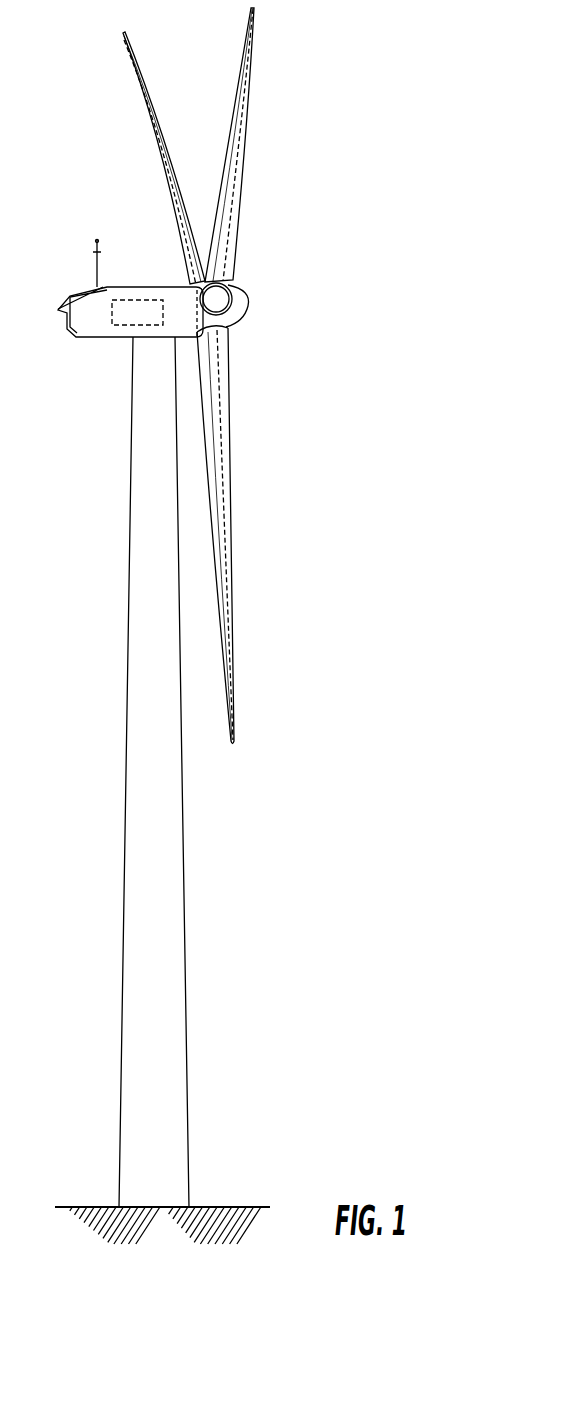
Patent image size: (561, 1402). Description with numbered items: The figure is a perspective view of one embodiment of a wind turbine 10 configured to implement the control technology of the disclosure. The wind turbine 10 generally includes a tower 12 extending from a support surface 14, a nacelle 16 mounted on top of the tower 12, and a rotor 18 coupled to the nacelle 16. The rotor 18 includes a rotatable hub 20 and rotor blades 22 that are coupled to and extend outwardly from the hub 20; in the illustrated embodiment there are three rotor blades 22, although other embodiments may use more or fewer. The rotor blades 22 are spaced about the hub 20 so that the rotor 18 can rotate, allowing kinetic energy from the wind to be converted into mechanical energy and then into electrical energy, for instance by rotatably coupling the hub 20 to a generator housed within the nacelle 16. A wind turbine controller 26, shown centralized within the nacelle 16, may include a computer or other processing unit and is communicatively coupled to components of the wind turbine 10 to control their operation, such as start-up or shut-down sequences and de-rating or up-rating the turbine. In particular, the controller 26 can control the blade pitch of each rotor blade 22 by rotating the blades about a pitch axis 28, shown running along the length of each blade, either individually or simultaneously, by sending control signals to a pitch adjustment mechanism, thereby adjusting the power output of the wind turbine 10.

The wind turbine 10 is at (392, 108).
The tower 12 is at (165, 845).
The support surface 14 is at (100, 1207).
The nacelle 16 is at (104, 338).
The rotor 18 is at (300, 237).
The rotatable hub 20 is at (248, 305).
The rotor blade 22 is at (235, 126).
The wind turbine controller 26 is at (150, 298).
The pitch axis 28 is at (165, 178).